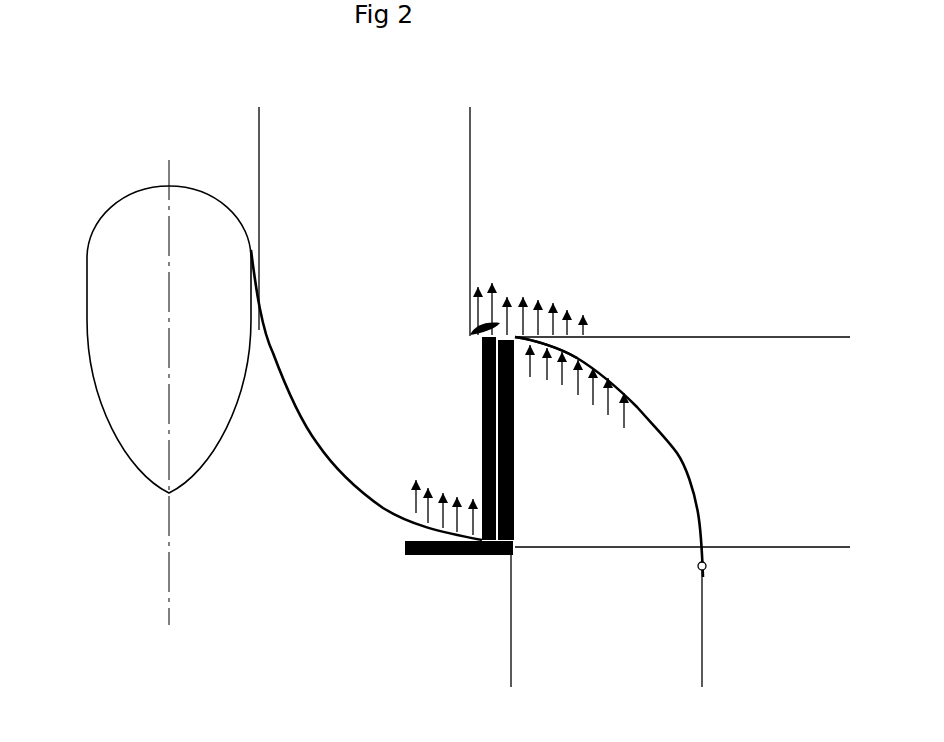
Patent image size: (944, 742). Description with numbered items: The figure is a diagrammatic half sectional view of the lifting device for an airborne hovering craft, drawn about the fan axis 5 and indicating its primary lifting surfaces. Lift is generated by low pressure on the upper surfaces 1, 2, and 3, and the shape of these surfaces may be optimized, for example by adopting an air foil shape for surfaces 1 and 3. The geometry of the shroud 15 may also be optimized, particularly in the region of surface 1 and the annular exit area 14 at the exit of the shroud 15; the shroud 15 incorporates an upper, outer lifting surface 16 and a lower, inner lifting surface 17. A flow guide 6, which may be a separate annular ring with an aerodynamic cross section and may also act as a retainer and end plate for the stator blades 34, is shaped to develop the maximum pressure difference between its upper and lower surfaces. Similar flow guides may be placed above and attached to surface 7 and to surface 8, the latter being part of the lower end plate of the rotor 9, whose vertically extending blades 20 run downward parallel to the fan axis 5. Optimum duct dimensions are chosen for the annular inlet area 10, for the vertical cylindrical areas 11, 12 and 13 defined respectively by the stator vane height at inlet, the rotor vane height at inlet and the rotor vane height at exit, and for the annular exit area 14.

The upper surface 1 is at (523, 297).
The upper surface 2 is at (478, 290).
The upper surface 3 is at (445, 490).
The fan axis 5 is at (167, 162).
The flow guide 6 is at (472, 320).
The surface 7 is at (388, 508).
The surface 8 is at (515, 545).
The rotor 9 is at (493, 438).
The annular inlet area 10 is at (469, 125).
The vertical cylindrical area 11 is at (693, 442).
The vertical cylindrical area 12 is at (693, 442).
The vertical cylindrical area 13 is at (828, 338).
The annular exit area 14 is at (512, 668).
The shroud 15 is at (638, 380).
The upper lifting surface 16 is at (543, 338).
The lower lifting surface 17 is at (558, 350).
The blades 20 is at (515, 428).
The stator blades 34 is at (483, 433).